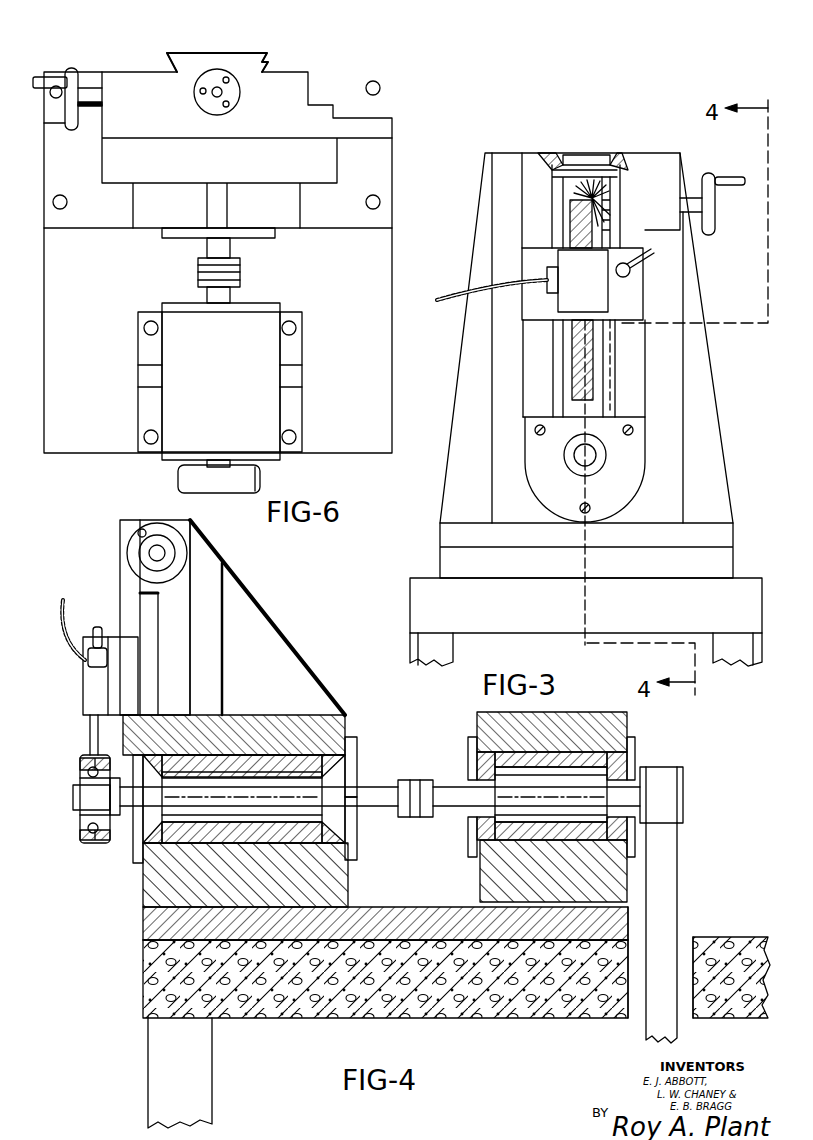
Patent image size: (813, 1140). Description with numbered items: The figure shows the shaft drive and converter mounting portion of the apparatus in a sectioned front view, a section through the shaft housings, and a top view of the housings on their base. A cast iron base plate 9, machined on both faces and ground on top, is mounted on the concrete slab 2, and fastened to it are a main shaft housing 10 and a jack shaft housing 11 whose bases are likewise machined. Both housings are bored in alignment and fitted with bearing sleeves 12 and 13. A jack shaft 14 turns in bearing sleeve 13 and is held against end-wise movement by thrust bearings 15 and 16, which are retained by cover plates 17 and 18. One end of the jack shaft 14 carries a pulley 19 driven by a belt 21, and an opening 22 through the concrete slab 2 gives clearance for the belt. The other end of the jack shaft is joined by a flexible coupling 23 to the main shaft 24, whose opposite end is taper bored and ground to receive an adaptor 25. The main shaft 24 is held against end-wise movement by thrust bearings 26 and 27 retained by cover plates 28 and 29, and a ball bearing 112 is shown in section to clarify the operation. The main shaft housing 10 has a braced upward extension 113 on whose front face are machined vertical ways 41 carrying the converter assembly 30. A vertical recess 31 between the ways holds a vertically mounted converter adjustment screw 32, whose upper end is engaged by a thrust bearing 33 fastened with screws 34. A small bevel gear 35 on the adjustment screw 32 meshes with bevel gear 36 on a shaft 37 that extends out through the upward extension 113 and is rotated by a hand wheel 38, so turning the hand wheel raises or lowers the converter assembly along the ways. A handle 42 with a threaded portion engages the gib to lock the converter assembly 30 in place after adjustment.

In FIG. 3, the concrete slab 2 is at (430, 602).
In FIG. 4, the concrete slab 2 is at (150, 997).
In FIG. 6, the base plate 9 is at (367, 270).
In FIG. 3, the base plate 9 is at (710, 560).
In FIG. 4, the base plate 9 is at (170, 933).
In FIG. 6, the main shaft housing 10 is at (367, 163).
In FIG. 3, the main shaft housing 10 is at (477, 493).
In FIG. 4, the main shaft housing 10 is at (175, 923).
In FIG. 6, the jack shaft housing 11 is at (258, 405).
In FIG. 4, the jack shaft housing 11 is at (510, 878).
In FIG. 4, the bearing sleeve 12 is at (183, 888).
In FIG. 4, the bearing sleeve 13 is at (515, 835).
In FIG. 4, the jack shaft 14 is at (497, 752).
In FIG. 4, the thrust bearing 15 is at (480, 782).
In FIG. 4, the thrust bearing 16 is at (637, 768).
In FIG. 4, the cover plate 17 is at (472, 770).
In FIG. 4, the cover plate 18 is at (633, 763).
In FIG. 6, the pulley 19 is at (195, 478).
In FIG. 4, the pulley 19 is at (687, 797).
In FIG. 4, the belt 21 is at (663, 883).
In FIG. 4, the opening 22 is at (690, 937).
In FIG. 6, the flexible coupling 23 is at (240, 272).
In FIG. 4, the flexible coupling 23 is at (417, 822).
In FIG. 4, the main shaft 24 is at (340, 722).
In FIG. 3, the adaptor 25 is at (597, 457).
In FIG. 4, the adaptor 25 is at (87, 800).
In FIG. 4, the thrust bearing 26 is at (183, 713).
In FIG. 4, the thrust bearing 27 is at (357, 763).
In FIG. 4, the cover plate 28 is at (132, 850).
In FIG. 4, the cover plate 29 is at (357, 837).
In FIG. 3, the converter assembly 30 is at (583, 297).
In FIG. 4, the converter assembly 30 is at (100, 693).
In FIG. 3, the vertical recess 31 is at (550, 190).
In FIG. 3, the converter adjustment screw 32 is at (573, 227).
In FIG. 6, the thrust bearing 33 is at (205, 83).
In FIG. 3, the thrust bearing 33 is at (583, 153).
In FIG. 6, the screws 34 is at (228, 75).
In FIG. 3, the bevel gear 35 is at (545, 157).
In FIG. 3, the bevel gear 36 is at (615, 200).
In FIG. 3, the shaft 37 is at (620, 203).
In FIG. 6, the hand wheel 38 is at (70, 68).
In FIG. 3, the hand wheel 38 is at (710, 222).
In FIG. 4, the hand wheel 38 is at (135, 552).
In FIG. 6, the vertical ways 41 is at (168, 58).
In FIG. 3, the vertical ways 41 is at (552, 388).
In FIG. 4, the vertical ways 41 is at (128, 598).
In FIG. 3, the handle 42 is at (631, 270).
In FIG. 4, the ball bearing 112 is at (83, 817).
In FIG. 3, the upward extension 113 is at (513, 228).
In FIG. 4, the upward extension 113 is at (228, 590).